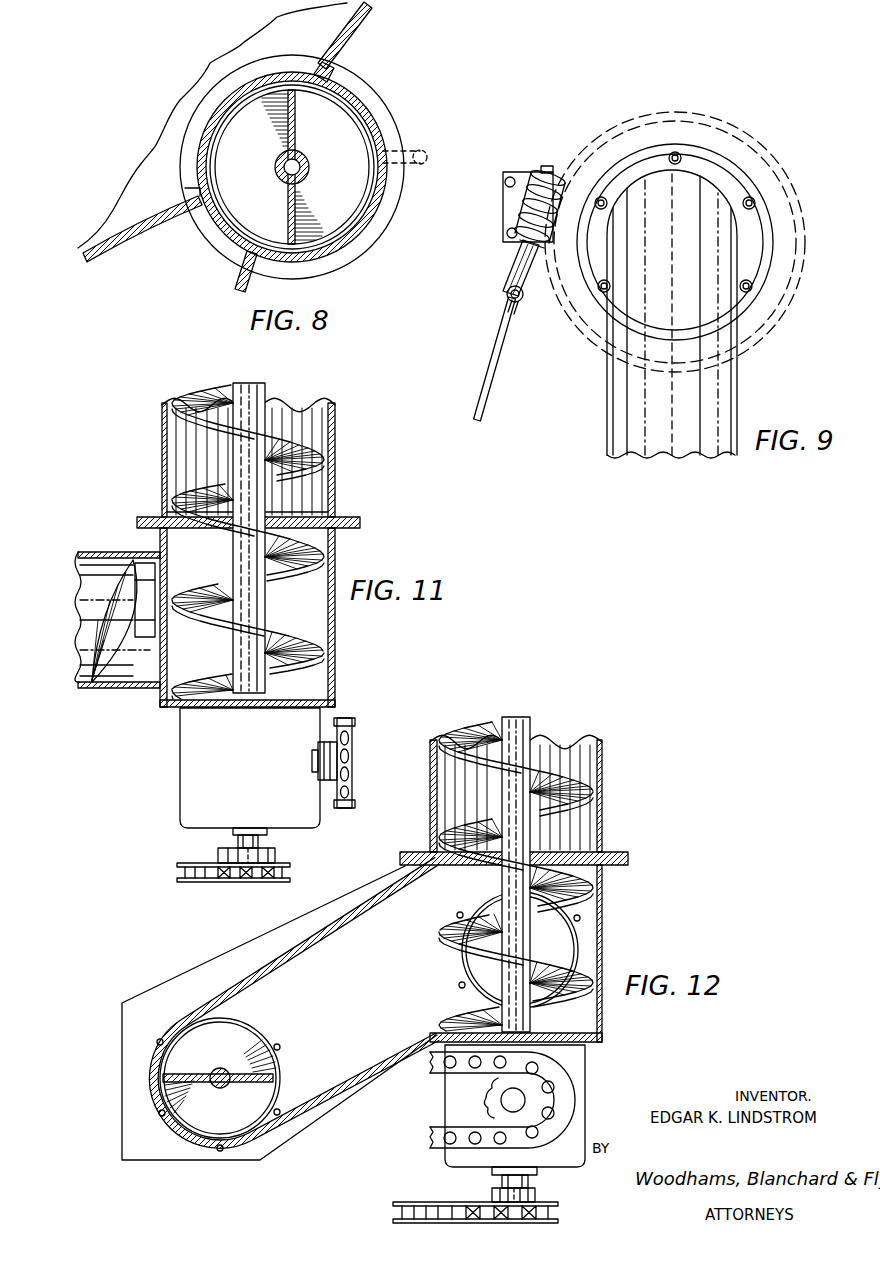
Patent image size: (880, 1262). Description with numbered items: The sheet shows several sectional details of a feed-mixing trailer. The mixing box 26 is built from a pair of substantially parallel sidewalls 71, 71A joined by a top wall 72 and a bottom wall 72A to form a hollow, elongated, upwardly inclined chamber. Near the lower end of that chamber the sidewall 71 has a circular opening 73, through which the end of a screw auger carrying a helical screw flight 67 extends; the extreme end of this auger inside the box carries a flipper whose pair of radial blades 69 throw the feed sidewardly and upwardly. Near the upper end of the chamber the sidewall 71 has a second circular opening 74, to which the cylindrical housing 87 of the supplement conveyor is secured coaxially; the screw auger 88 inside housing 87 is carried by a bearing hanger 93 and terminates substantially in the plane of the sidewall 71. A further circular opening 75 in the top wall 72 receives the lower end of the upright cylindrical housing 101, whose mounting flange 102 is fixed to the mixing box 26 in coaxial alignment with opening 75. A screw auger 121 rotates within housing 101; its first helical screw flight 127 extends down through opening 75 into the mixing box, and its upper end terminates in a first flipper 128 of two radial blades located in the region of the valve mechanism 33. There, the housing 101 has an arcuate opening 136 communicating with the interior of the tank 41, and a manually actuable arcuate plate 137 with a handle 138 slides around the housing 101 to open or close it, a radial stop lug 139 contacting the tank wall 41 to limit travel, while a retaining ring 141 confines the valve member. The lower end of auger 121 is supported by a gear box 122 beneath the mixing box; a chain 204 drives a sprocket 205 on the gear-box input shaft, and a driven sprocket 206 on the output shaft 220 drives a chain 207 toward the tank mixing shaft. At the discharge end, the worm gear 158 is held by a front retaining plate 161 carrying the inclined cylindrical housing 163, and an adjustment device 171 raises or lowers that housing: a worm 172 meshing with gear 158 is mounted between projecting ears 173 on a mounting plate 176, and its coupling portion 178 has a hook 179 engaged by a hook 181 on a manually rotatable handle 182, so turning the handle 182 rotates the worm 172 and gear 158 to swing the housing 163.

In FIG. 11, the mixing box 26 is at (353, 624).
In FIG. 8, the valve mechanism 33 is at (216, 242).
In FIG. 8, the tank 41 is at (130, 250).
In FIG. 12, the helical screw flight 67 is at (243, 1118).
In FIG. 12, the radial blades 69 is at (170, 1075).
In FIG. 11, the sidewall 71 is at (160, 702).
In FIG. 12, the sidewall 71 is at (140, 1000).
In FIG. 11, the sidewall 71A is at (336, 672).
In FIG. 12, the top wall 72 is at (230, 1000).
In FIG. 11, the bottom wall 72A is at (215, 702).
In FIG. 12, the bottom wall 72A is at (305, 1108).
In FIG. 12, the circular opening 73 is at (195, 1130).
In FIG. 11, the circular opening 74 is at (168, 656).
In FIG. 12, the circular opening 74 is at (560, 940).
In FIG. 11, the circular opening 75 is at (305, 512).
In FIG. 11, the cylindrical housing 87 is at (97, 552).
In FIG. 11, the screw auger 88 is at (107, 688).
In FIG. 11, the bearing hanger 93 is at (150, 588).
In FIG. 8, the cylindrical housing 101 is at (330, 245).
In FIG. 11, the cylindrical housing 101 is at (338, 430).
In FIG. 12, the cylindrical housing 101 is at (605, 755).
In FIG. 11, the mounting flange 102 is at (355, 522).
In FIG. 12, the mounting flange 102 is at (630, 858).
In FIG. 11, the screw auger 121 is at (275, 386).
In FIG. 12, the screw auger 121 is at (545, 706).
In FIG. 11, the gear box 122 is at (190, 778).
In FIG. 12, the gear box 122 is at (570, 1085).
In FIG. 11, the helical screw flight 127 is at (187, 395).
In FIG. 12, the helical screw flight 127 is at (580, 790).
In FIG. 8, the first flipper 128 is at (295, 122).
In FIG. 8, the arcuate opening 136 is at (225, 130).
In FIG. 8, the arcuate plate 137 is at (218, 115).
In FIG. 8, the handle 138 is at (235, 290).
In FIG. 8, the stop lug 139 is at (332, 60).
In FIG. 8, the retaining ring 141 is at (372, 95).
In FIG. 9, the worm gear 158 is at (683, 126).
In FIG. 9, the front retaining plate 161 is at (722, 172).
In FIG. 9, the cylindrical housing 163 is at (728, 403).
In FIG. 9, the adjustment device 171 is at (510, 253).
In FIG. 9, the worm 172 is at (530, 210).
In FIG. 9, the projecting ears 173 is at (542, 176).
In FIG. 9, the mounting plate 176 is at (505, 190).
In FIG. 9, the coupling portion 178 is at (518, 262).
In FIG. 9, the hook 179 is at (507, 294).
In FIG. 9, the hook 181 is at (511, 312).
In FIG. 9, the handle 182 is at (490, 390).
In FIG. 11, the chain 204 is at (352, 720).
In FIG. 12, the chain 204 is at (447, 1135).
In FIG. 11, the sprocket 205 is at (345, 758).
In FIG. 12, the sprocket 205 is at (490, 1108).
In FIG. 11, the driven sprocket 206 is at (275, 855).
In FIG. 12, the driven sprocket 206 is at (535, 1195).
In FIG. 11, the chain 207 is at (210, 880).
In FIG. 12, the chain 207 is at (405, 1205).
In FIG. 11, the output shaft 220 is at (240, 838).